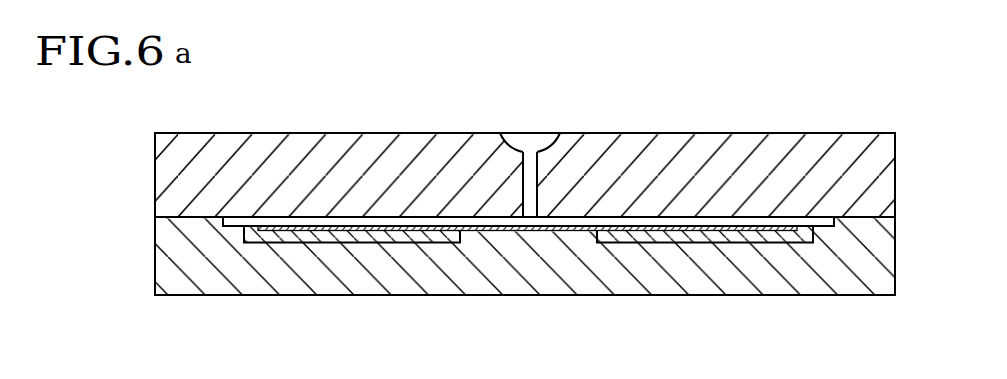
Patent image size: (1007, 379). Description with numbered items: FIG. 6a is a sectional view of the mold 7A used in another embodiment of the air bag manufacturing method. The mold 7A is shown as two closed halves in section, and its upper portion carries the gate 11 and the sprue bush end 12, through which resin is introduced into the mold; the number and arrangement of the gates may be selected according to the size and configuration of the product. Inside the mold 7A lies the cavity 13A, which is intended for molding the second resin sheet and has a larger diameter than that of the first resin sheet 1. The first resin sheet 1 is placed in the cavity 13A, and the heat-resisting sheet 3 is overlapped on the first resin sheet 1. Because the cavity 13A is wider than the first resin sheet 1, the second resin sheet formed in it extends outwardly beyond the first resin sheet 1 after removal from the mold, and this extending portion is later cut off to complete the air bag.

The mold 7A is at (840, 130).
The gate 11 is at (522, 176).
The sprue bush end 12 is at (553, 145).
The heat-resisting sheet 3 is at (643, 227).
The cavity 13A is at (703, 222).
The first resin sheet 1 is at (700, 240).